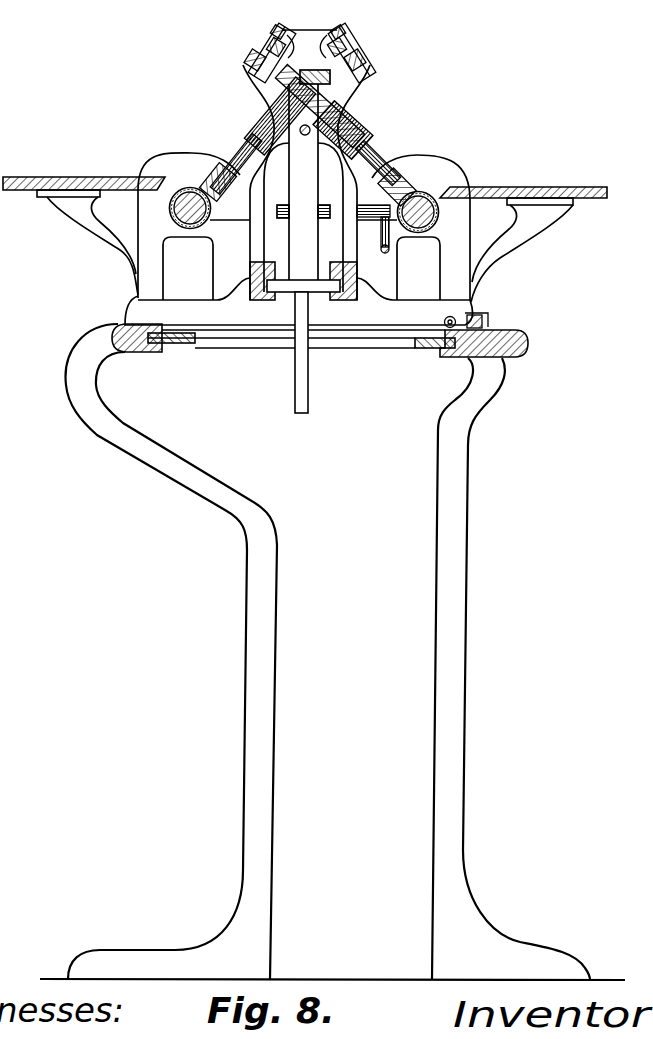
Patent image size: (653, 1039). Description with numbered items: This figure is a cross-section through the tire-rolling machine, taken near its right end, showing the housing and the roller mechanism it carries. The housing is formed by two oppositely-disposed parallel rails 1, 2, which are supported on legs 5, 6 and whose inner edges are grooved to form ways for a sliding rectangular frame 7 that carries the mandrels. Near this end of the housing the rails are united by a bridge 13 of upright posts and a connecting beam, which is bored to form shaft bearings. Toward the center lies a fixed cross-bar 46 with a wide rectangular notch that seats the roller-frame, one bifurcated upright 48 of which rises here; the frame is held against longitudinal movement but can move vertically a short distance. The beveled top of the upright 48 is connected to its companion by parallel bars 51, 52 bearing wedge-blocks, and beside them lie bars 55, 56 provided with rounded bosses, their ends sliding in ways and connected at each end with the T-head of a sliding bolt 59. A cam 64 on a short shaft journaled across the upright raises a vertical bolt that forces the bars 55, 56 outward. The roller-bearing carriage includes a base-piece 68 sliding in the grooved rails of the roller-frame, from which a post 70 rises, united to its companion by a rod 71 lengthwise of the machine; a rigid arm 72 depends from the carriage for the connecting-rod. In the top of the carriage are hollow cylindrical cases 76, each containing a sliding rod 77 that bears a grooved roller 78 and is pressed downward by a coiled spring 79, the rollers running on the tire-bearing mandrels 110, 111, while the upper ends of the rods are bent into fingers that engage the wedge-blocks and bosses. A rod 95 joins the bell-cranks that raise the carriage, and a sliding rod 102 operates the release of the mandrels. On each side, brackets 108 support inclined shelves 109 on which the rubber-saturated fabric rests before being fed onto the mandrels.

The rail 1 is at (512, 358).
The rail 2 is at (143, 352).
The leg 5 is at (511, 669).
The leg 6 is at (240, 627).
The rectangular frame 7 is at (370, 350).
The bridge 13 is at (304, 182).
The cross-bar 46 is at (299, 301).
The bifurcated upright 48 is at (302, 217).
The parallel bar 51 is at (312, 53).
The parallel bar 52 is at (258, 53).
The bar 55 is at (311, 27).
The bar 56 is at (247, 62).
The sliding bolt 59 is at (290, 50).
The cam 64 is at (373, 222).
The base-piece 68 is at (303, 291).
The post 70 is at (303, 175).
The rod 71 is at (305, 136).
The rigid arm 72 is at (308, 352).
The hollow cylindrical case 76 is at (262, 122).
The sliding rod 77 is at (246, 145).
The grooved roller 78 is at (206, 180).
The coiled spring 79 is at (363, 130).
The rod 95 is at (444, 322).
The sliding rod 102 is at (485, 318).
The bracket 108 is at (310, 249).
The shelf 109 is at (305, 183).
The mandrel 110 is at (170, 214).
The mandrel 111 is at (437, 216).